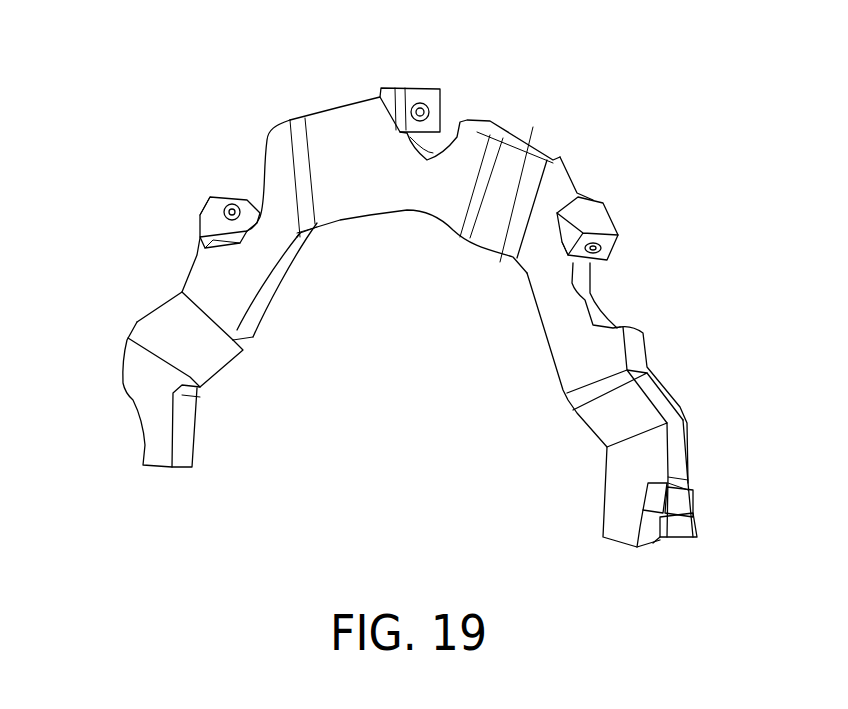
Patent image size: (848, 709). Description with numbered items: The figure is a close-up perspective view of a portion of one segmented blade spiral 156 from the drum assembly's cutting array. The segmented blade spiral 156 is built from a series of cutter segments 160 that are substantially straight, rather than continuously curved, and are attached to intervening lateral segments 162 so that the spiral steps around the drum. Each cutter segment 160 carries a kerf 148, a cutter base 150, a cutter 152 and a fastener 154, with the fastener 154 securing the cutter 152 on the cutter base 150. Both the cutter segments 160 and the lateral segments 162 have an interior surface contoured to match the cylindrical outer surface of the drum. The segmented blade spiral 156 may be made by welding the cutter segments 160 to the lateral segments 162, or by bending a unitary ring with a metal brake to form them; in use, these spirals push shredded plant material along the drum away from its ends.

The kerf 148 is at (580, 288).
The cutter base 150 is at (200, 232).
The cutter 152 is at (213, 208).
The fastener 154 is at (233, 211).
The segmented blade spiral 156 is at (443, 278).
The cutter segment 160 is at (273, 145).
The lateral segment 162 is at (313, 122).